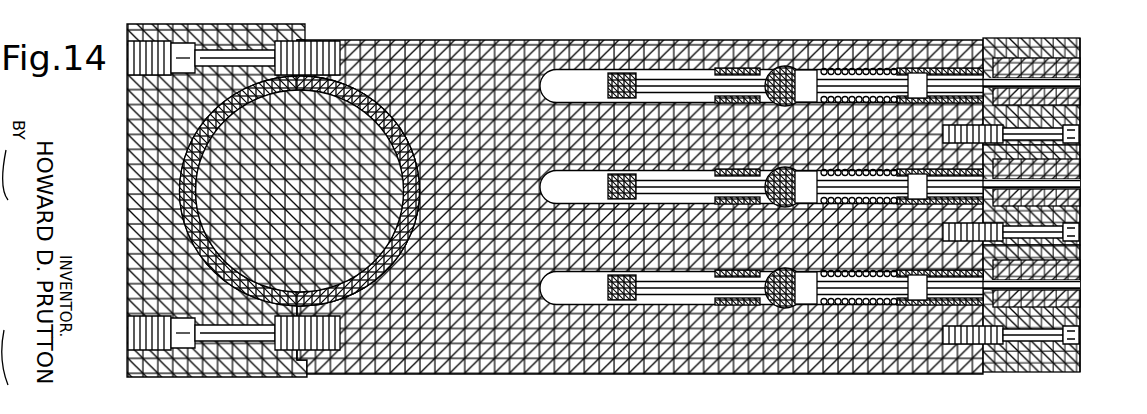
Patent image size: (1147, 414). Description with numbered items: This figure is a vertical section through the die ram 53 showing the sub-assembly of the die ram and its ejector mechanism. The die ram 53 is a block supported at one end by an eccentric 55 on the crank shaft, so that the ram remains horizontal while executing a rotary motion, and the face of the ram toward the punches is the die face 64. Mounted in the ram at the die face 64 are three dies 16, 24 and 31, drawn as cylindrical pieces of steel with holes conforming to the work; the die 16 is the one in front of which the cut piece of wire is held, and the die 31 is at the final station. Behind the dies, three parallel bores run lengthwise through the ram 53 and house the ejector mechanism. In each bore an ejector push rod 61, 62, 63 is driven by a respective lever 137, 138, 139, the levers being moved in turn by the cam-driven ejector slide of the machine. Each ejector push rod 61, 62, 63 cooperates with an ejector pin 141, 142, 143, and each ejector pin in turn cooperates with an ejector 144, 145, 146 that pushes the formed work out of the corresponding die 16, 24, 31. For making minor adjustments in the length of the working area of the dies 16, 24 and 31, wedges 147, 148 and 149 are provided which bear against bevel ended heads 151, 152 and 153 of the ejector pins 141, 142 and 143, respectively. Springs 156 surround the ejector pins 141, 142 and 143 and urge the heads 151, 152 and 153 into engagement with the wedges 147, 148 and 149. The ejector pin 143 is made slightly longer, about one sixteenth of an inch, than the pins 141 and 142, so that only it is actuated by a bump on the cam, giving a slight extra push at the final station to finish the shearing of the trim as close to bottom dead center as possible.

The die 16 is at (1082, 72).
The die 24 is at (1082, 178).
The die 31 is at (1082, 270).
The die ram 53 is at (467, 40).
The eccentric 55 is at (185, 178).
The ejector push rod 61 is at (665, 97).
The ejector push rod 62 is at (672, 205).
The ejector push rod 63 is at (696, 305).
The die face 64 is at (1097, 223).
The lever 137 is at (606, 78).
The lever 138 is at (608, 188).
The lever 139 is at (608, 289).
The ejector pin 141 is at (862, 68).
The ejector pin 142 is at (868, 203).
The ejector pin 143 is at (868, 305).
The ejector 144 is at (985, 58).
The ejector 145 is at (948, 168).
The ejector 146 is at (955, 270).
The wedge 147 is at (780, 66).
The wedge 148 is at (790, 165).
The wedge 149 is at (787, 266).
The bevel ended head 151 is at (810, 70).
The bevel ended head 152 is at (808, 170).
The bevel ended head 153 is at (808, 270).
The spring 156 is at (885, 68).